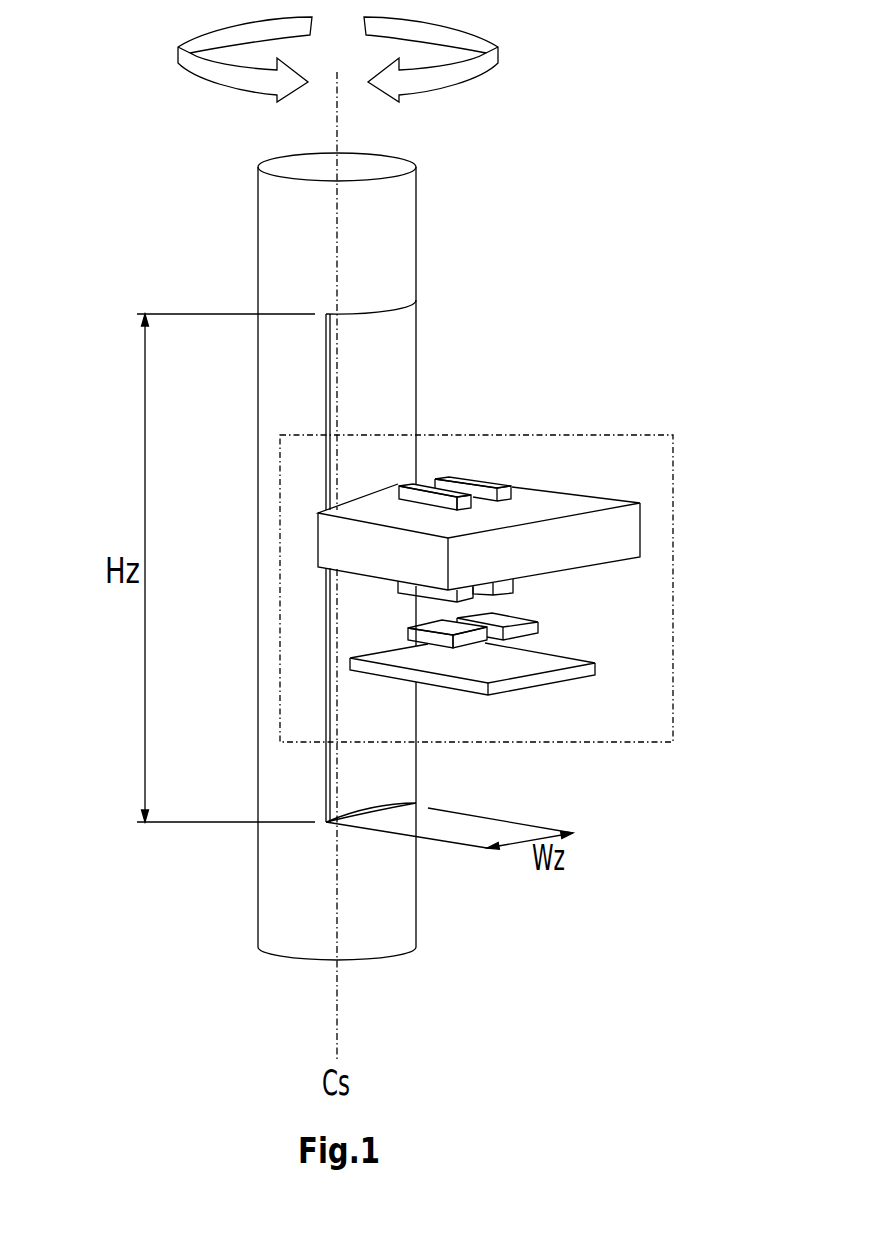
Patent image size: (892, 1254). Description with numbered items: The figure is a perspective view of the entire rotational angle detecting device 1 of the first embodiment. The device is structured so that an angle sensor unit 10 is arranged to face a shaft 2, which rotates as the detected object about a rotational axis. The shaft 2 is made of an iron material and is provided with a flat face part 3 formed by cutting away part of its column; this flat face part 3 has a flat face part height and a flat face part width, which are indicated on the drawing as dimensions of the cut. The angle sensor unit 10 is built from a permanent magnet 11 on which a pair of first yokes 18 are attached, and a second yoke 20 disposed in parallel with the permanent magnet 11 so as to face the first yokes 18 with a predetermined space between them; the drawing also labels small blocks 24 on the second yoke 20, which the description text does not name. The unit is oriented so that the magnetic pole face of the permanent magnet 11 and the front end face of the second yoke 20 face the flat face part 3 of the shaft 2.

The rotational angle detecting device 1 is at (567, 195).
The shaft 2 is at (258, 222).
The flat face part 3 is at (388, 360).
The angle sensor unit 10 is at (673, 483).
The permanent magnet 11 is at (578, 490).
The first yokes 18 is at (458, 477).
The second yoke 20 is at (525, 690).
The lower cutting inserts 24 is at (510, 612).